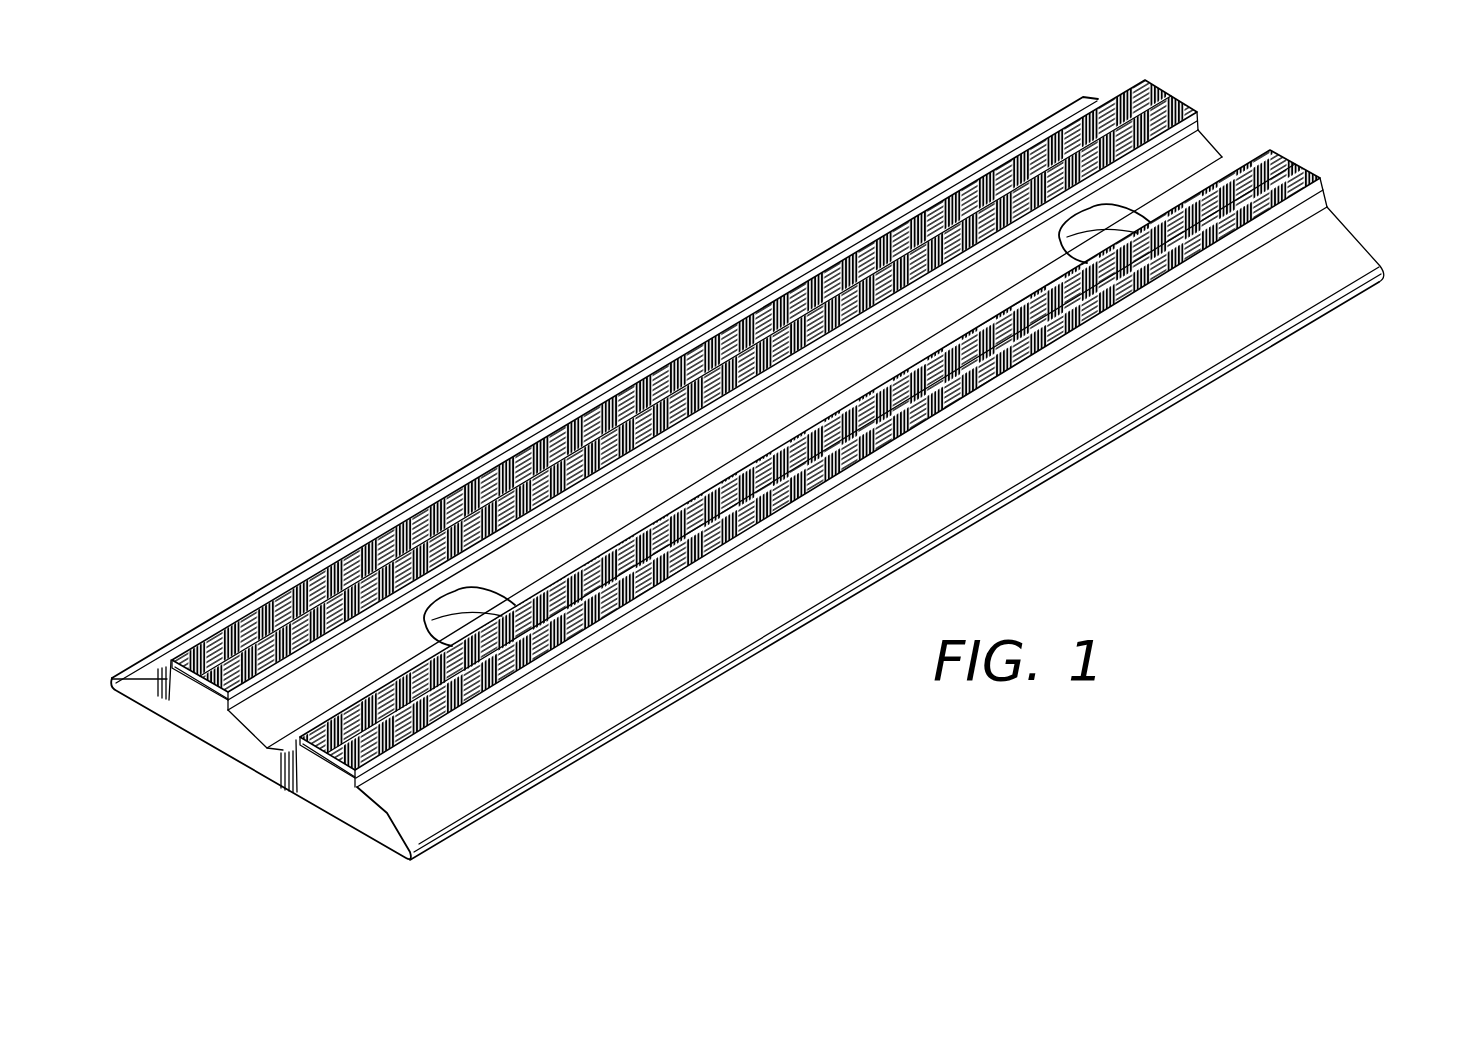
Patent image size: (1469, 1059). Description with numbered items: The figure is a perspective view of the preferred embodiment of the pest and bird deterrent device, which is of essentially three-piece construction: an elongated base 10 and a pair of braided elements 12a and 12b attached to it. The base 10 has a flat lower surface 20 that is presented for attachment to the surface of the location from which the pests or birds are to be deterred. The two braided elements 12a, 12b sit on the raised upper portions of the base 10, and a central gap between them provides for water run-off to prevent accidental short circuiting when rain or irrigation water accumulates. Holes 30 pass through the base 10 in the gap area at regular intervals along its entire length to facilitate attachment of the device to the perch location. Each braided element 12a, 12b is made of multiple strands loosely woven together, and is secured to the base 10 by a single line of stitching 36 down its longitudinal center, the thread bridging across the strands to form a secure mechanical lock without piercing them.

The base 10 is at (790, 462).
The braided element 12a is at (1290, 157).
The braided element 12b is at (737, 381).
The flat lower surface 20 is at (1115, 440).
The holes 30 is at (1100, 243).
The line of stitching 36 is at (880, 240).